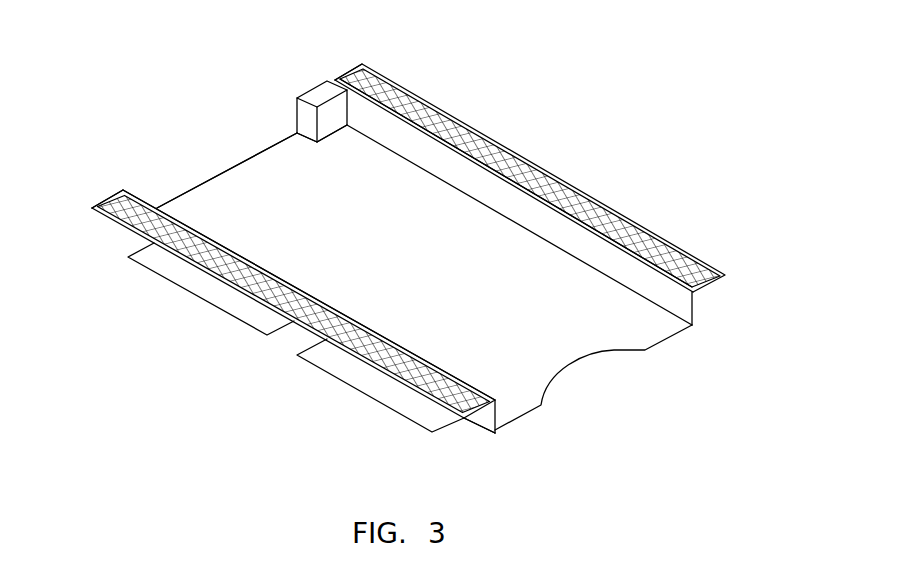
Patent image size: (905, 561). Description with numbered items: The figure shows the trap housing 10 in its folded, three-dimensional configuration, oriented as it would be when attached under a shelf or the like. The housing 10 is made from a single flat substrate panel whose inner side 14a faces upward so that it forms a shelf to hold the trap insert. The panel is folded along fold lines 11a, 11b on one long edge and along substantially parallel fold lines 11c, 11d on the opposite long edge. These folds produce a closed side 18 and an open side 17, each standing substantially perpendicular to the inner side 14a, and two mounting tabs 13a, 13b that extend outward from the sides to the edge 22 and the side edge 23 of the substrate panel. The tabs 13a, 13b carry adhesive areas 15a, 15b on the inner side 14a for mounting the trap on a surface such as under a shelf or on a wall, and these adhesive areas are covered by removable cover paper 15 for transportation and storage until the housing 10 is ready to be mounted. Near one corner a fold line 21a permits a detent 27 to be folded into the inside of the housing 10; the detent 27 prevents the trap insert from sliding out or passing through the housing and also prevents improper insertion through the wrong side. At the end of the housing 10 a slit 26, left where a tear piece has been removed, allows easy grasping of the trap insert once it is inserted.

The trap housing 10 is at (584, 134).
The fold line 11a is at (657, 278).
The fold line 11b is at (305, 96).
The fold line 11c is at (475, 430).
The fold line 11d is at (463, 367).
The tab 13a is at (409, 84).
The tab 13b is at (120, 234).
The inner side 14a is at (300, 145).
The cover paper 15 is at (432, 109).
The adhesive area 15a is at (353, 76).
The adhesive area 15b is at (111, 201).
The open side 17 is at (500, 431).
The closed side 18 is at (696, 309).
The fold line 21a is at (247, 170).
The edge 22 is at (490, 129).
The side edge 23 is at (366, 371).
The slit 26 is at (577, 385).
The detent 27 is at (290, 108).